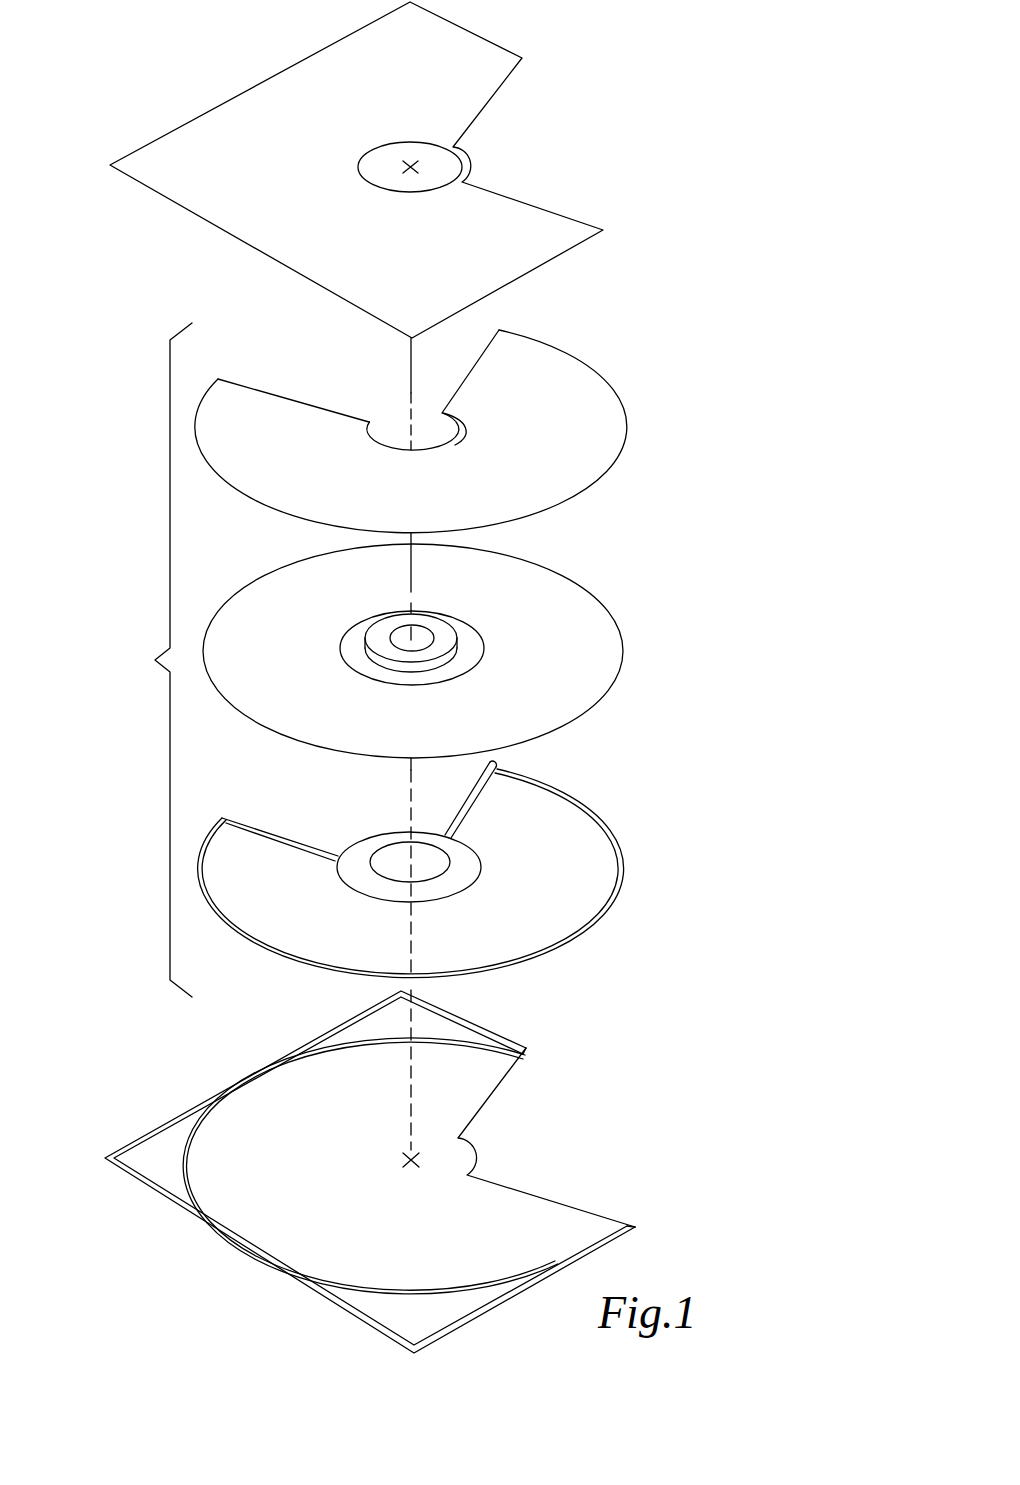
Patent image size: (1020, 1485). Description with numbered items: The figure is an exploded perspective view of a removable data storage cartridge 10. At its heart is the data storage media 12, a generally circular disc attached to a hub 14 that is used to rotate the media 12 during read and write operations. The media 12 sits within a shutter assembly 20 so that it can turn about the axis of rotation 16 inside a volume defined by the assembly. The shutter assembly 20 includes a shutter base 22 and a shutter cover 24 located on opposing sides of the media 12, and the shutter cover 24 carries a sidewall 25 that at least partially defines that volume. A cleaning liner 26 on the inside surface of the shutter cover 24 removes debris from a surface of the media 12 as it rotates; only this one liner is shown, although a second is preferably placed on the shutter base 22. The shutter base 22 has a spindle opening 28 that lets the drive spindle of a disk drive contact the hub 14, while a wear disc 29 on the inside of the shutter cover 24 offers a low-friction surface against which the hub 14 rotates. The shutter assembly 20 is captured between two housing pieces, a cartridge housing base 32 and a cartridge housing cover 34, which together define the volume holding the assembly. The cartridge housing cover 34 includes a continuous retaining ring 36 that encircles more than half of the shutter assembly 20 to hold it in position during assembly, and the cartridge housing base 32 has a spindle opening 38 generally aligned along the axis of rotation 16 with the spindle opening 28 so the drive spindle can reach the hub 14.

The removable data storage cartridge 10 is at (730, 128).
The data storage media 12 is at (413, 639).
The hub 14 is at (382, 632).
The axis of rotation 16 is at (407, 386).
The shutter assembly 20 is at (148, 660).
The shutter base 22 is at (417, 422).
The shutter cover 24 is at (445, 860).
The sidewall 25 is at (560, 783).
The cleaning liner 26 is at (318, 917).
The spindle opening 28 is at (450, 440).
The wear disc 29 is at (387, 860).
The cartridge housing base 32 is at (377, 170).
The cartridge housing cover 34 is at (370, 1172).
The retaining ring 36 is at (465, 1048).
The spindle opening 38 is at (458, 171).